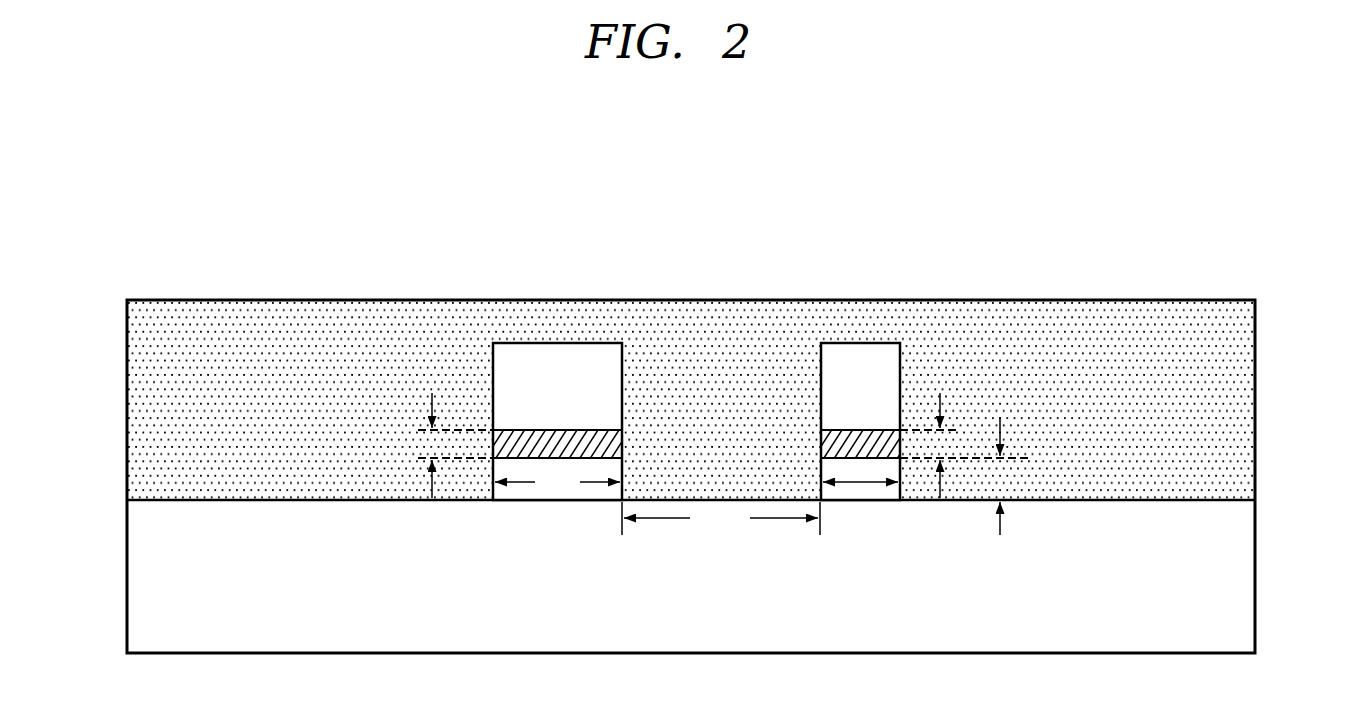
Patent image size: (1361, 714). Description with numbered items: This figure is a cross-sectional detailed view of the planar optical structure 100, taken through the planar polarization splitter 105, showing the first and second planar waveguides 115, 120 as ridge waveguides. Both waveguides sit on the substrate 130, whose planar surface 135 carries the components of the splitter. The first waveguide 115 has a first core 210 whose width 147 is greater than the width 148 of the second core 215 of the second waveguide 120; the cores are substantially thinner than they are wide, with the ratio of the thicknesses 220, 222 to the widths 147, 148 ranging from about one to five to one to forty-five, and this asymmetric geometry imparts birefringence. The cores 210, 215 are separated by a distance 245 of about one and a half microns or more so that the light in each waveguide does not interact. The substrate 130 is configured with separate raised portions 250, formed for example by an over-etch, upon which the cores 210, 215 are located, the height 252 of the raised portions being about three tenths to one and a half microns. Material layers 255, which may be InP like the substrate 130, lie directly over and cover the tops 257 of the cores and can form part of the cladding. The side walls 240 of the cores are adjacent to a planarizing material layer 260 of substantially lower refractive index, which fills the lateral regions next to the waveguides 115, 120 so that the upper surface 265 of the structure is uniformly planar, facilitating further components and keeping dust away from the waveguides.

The planar optical structure 100 is at (170, 148).
The planar polarization splitter 105 is at (1048, 237).
The first planar waveguide 115 is at (606, 321).
The second planar waveguide 120 is at (866, 321).
The substrate 130 is at (142, 641).
The planar surface 135 is at (285, 483).
The width of first core 147 is at (557, 481).
The width of second core 148 is at (858, 483).
The first core 210 is at (614, 446).
The second core 215 is at (829, 446).
The thickness of first core 220 is at (430, 398).
The thickness of second core 222 is at (942, 402).
The side walls 240 is at (481, 417).
The distance 245 is at (721, 517).
The raised portions 250 is at (826, 466).
The height of raised portions 252 is at (1000, 535).
The material layers 255 is at (614, 406).
The tops of cores 257 is at (514, 425).
The planarizing material layer 260 is at (1226, 394).
The upper surface 265 is at (216, 290).